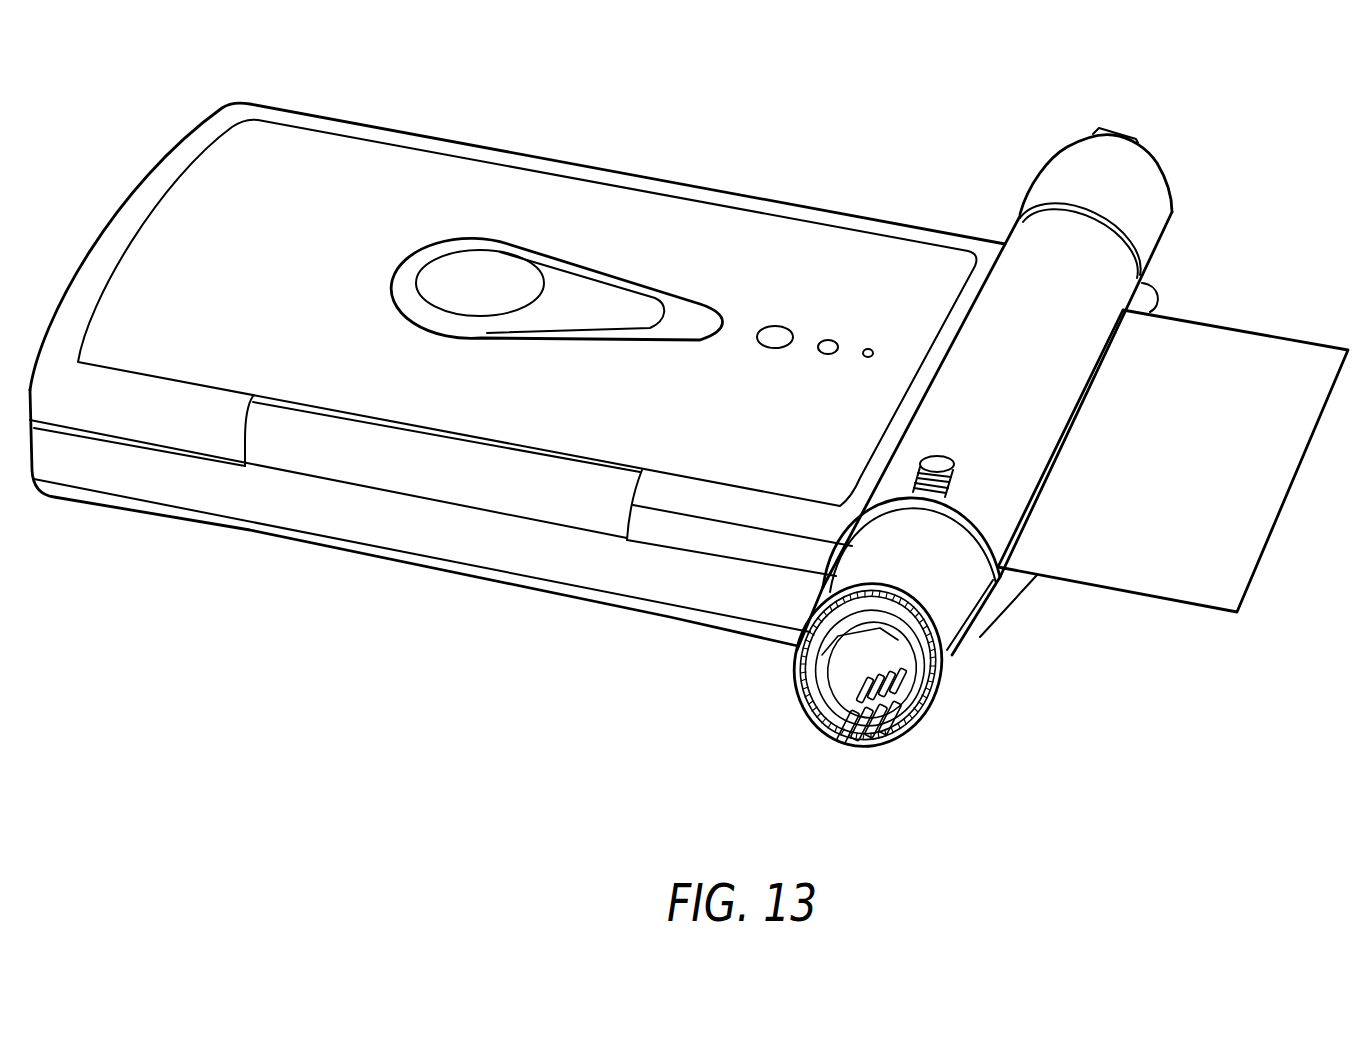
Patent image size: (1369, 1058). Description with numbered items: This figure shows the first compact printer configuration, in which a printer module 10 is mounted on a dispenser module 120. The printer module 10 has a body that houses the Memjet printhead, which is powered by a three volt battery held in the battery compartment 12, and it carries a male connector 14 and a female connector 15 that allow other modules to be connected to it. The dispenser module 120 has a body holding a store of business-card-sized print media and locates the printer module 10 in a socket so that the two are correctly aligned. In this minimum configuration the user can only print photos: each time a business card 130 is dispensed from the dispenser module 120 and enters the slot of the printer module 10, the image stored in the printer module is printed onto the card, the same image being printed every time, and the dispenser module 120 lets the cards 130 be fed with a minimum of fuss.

The dispenser module 120 is at (547, 160).
The printer module 10 is at (1019, 422).
The battery compartment 12 is at (960, 608).
The male connector 14 is at (1145, 148).
The female connector 15 is at (950, 687).
The business card 130 is at (1257, 334).